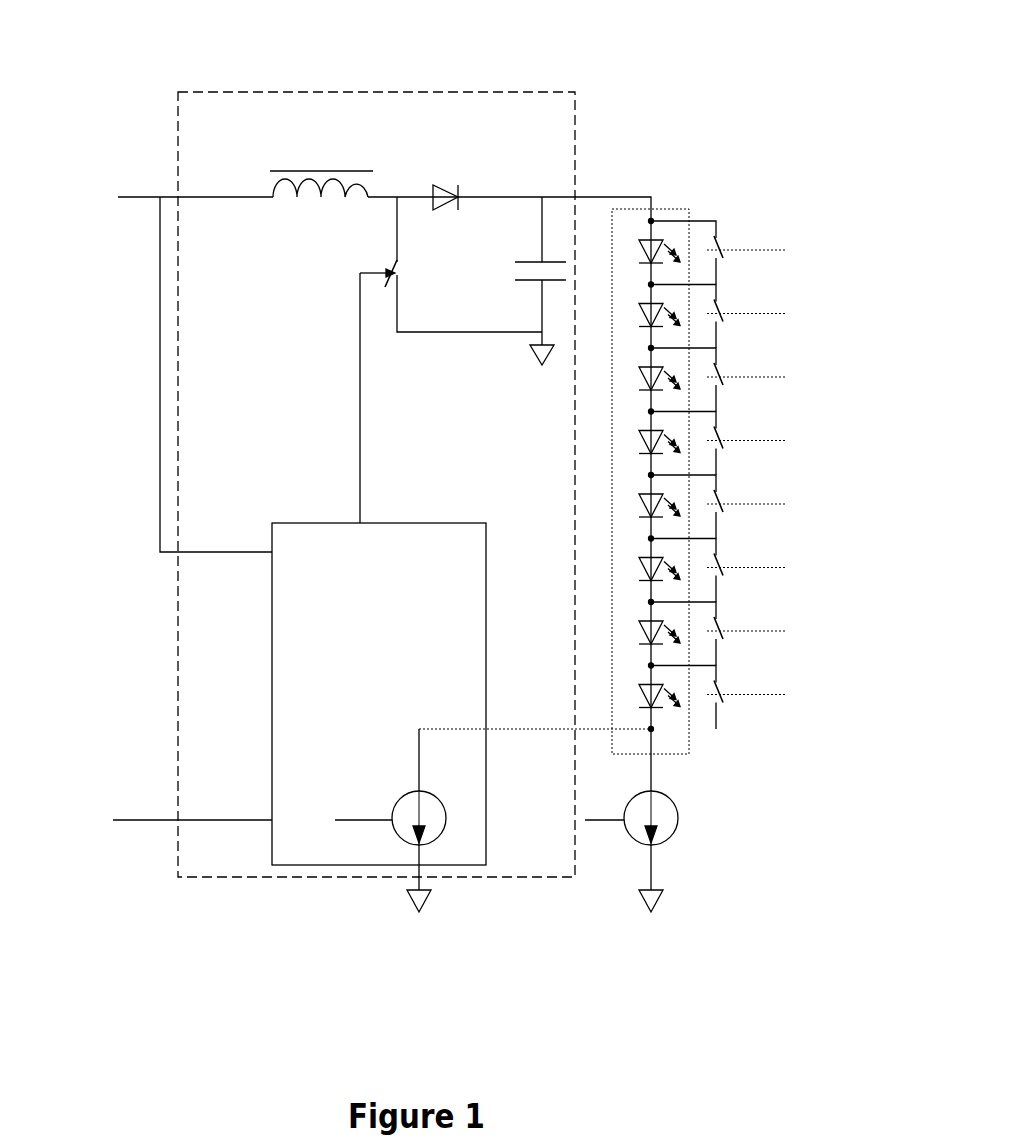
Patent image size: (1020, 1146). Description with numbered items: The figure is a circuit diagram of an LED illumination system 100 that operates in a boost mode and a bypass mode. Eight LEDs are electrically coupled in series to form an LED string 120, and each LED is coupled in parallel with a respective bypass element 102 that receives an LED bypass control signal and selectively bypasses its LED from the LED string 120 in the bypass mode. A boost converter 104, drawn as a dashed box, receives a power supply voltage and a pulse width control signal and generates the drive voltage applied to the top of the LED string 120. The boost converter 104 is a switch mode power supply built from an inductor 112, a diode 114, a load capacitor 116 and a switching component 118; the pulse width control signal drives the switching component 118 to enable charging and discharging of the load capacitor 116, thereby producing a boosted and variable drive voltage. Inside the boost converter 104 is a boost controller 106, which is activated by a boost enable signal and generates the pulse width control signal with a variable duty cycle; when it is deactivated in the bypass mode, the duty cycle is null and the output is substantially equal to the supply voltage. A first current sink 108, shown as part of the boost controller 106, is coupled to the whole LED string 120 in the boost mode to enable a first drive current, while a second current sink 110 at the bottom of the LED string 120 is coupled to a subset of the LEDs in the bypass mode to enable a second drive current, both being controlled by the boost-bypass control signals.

The LED illumination system 100 is at (606, 62).
The bypass element 102 is at (719, 243).
The boost converter 104 is at (412, 119).
The boost controller 106 is at (360, 664).
The first current sink 108 is at (407, 791).
The second current sink 110 is at (679, 808).
The inductor 112 is at (357, 170).
The diode 114 is at (448, 183).
The load capacitor 116 is at (548, 258).
The switching component 118 is at (402, 286).
The LED string 120 is at (680, 209).